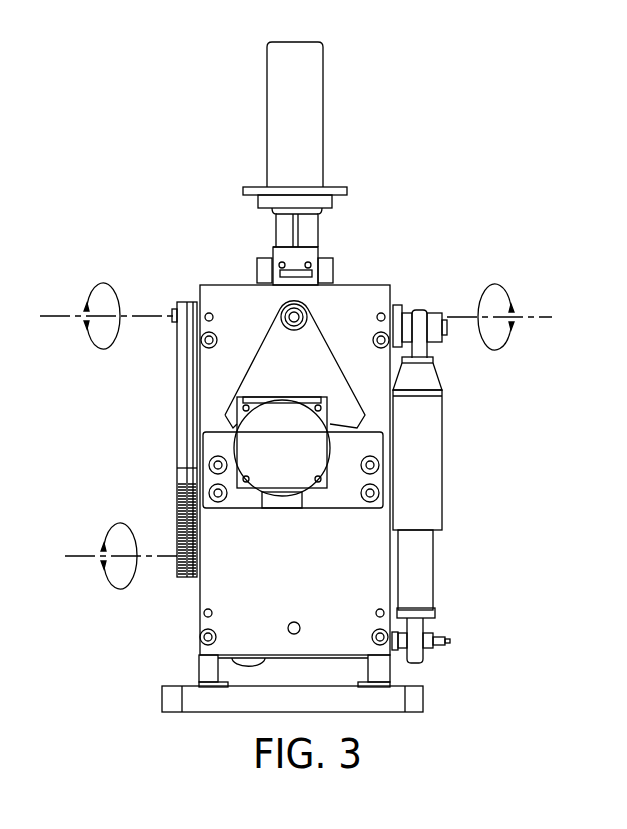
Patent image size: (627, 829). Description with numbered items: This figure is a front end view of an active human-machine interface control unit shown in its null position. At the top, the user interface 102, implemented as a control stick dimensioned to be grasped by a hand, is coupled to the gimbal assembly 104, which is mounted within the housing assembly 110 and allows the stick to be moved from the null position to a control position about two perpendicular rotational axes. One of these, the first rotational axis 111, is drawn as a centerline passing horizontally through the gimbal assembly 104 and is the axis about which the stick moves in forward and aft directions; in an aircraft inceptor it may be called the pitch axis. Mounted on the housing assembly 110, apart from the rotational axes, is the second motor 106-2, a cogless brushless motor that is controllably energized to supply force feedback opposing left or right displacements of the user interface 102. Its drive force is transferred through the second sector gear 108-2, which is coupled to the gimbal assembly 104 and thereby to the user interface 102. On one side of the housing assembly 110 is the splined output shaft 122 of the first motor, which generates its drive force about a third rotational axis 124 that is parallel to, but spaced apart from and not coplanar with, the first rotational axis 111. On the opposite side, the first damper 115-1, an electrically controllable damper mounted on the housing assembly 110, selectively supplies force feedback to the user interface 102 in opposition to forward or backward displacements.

The user interface 102 is at (325, 121).
The gimbal assembly 104 is at (333, 253).
The second motor 106-2 is at (307, 459).
The second sector gear 108-2 is at (277, 338).
The housing assembly 110 is at (212, 296).
The first rotational axis 111 is at (66, 314).
The first damper 115-1 is at (442, 434).
The splined output shaft 122 is at (180, 578).
The third rotational axis 124 is at (82, 554).